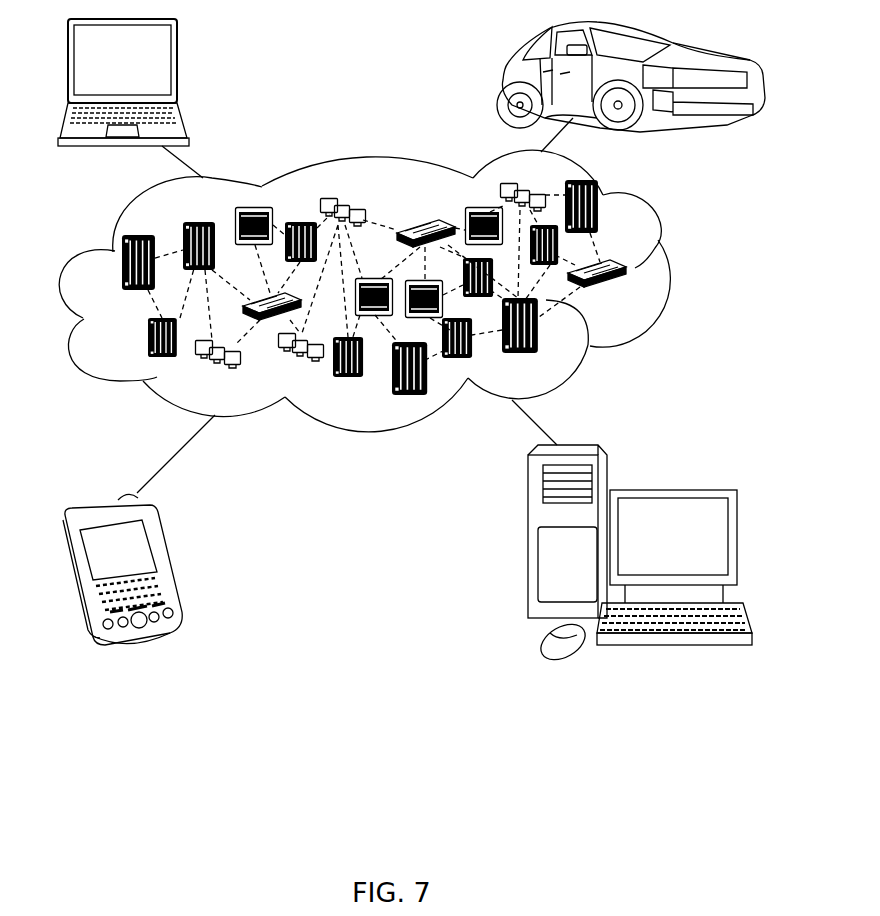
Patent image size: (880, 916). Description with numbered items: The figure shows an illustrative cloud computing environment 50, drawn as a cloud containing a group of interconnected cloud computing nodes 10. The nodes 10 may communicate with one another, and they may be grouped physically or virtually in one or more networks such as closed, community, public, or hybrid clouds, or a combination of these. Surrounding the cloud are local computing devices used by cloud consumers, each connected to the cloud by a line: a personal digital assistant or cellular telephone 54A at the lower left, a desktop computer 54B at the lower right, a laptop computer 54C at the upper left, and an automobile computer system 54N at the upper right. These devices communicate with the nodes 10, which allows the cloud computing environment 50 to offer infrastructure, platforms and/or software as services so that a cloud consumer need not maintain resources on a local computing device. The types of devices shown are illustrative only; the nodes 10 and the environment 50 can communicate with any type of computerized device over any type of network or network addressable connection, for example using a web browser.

The laptop computer 54C is at (177, 67).
The automobile computer system 54N is at (505, 77).
The personal digital assistant or cellular telephone 54A is at (168, 558).
The desktop computer 54B is at (670, 488).
The cloud computing environment 50 is at (672, 271).
The cloud computing node 10 is at (638, 297).